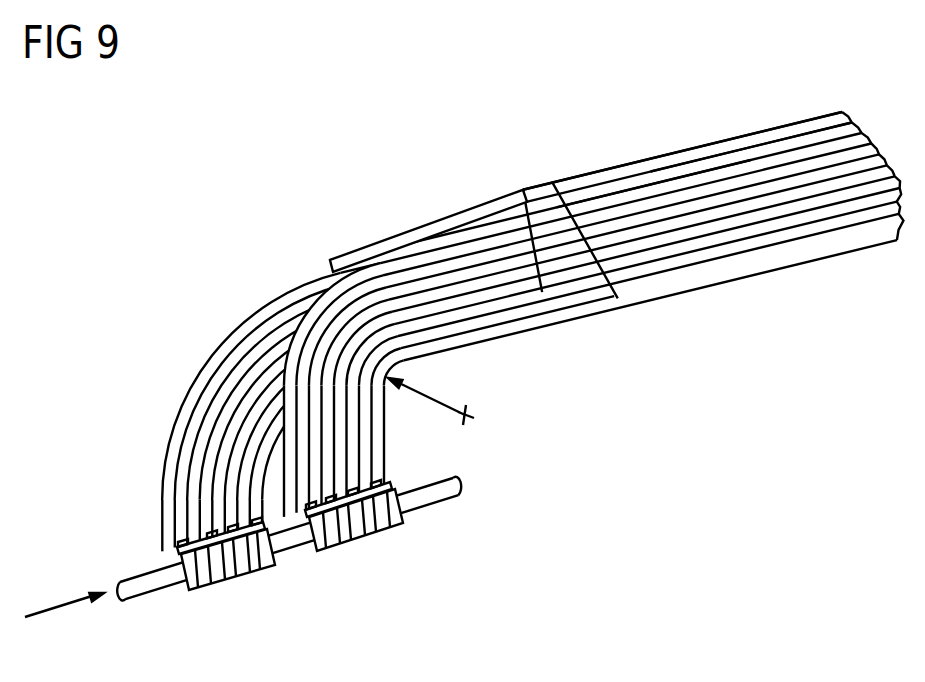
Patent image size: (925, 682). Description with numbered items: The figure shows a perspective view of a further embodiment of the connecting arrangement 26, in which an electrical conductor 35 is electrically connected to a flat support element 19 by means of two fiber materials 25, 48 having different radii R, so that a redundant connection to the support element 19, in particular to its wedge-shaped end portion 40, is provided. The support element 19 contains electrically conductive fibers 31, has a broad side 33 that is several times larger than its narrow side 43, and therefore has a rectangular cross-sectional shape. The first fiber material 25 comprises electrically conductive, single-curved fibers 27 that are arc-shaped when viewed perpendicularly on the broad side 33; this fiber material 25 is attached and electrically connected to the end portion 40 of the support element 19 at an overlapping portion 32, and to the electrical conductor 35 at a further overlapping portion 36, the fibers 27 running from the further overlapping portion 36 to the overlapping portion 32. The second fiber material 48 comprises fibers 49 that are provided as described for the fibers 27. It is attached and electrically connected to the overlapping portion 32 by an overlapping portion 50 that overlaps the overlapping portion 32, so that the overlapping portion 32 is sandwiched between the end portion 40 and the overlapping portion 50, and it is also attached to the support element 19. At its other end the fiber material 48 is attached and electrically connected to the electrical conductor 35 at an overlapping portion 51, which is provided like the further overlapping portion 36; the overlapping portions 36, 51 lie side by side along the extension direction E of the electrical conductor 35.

The support element 19 is at (766, 115).
The fiber material 25 is at (186, 366).
The connecting arrangement 26 is at (490, 103).
The fibers 27 is at (172, 478).
The fibers 31 is at (630, 175).
The overlapping portion 32 is at (392, 244).
The broad side 33 is at (697, 157).
The electrical conductor 35 is at (432, 495).
The further overlapping portion 36 is at (222, 573).
The end portion 40 is at (565, 307).
The narrow side 43 is at (793, 258).
The fiber material 48 is at (400, 453).
The fibers 49 is at (333, 303).
The overlapping portion 50 is at (463, 245).
The overlapping portion 51 is at (365, 527).
The radii R is at (440, 398).
The extension direction E is at (63, 578).